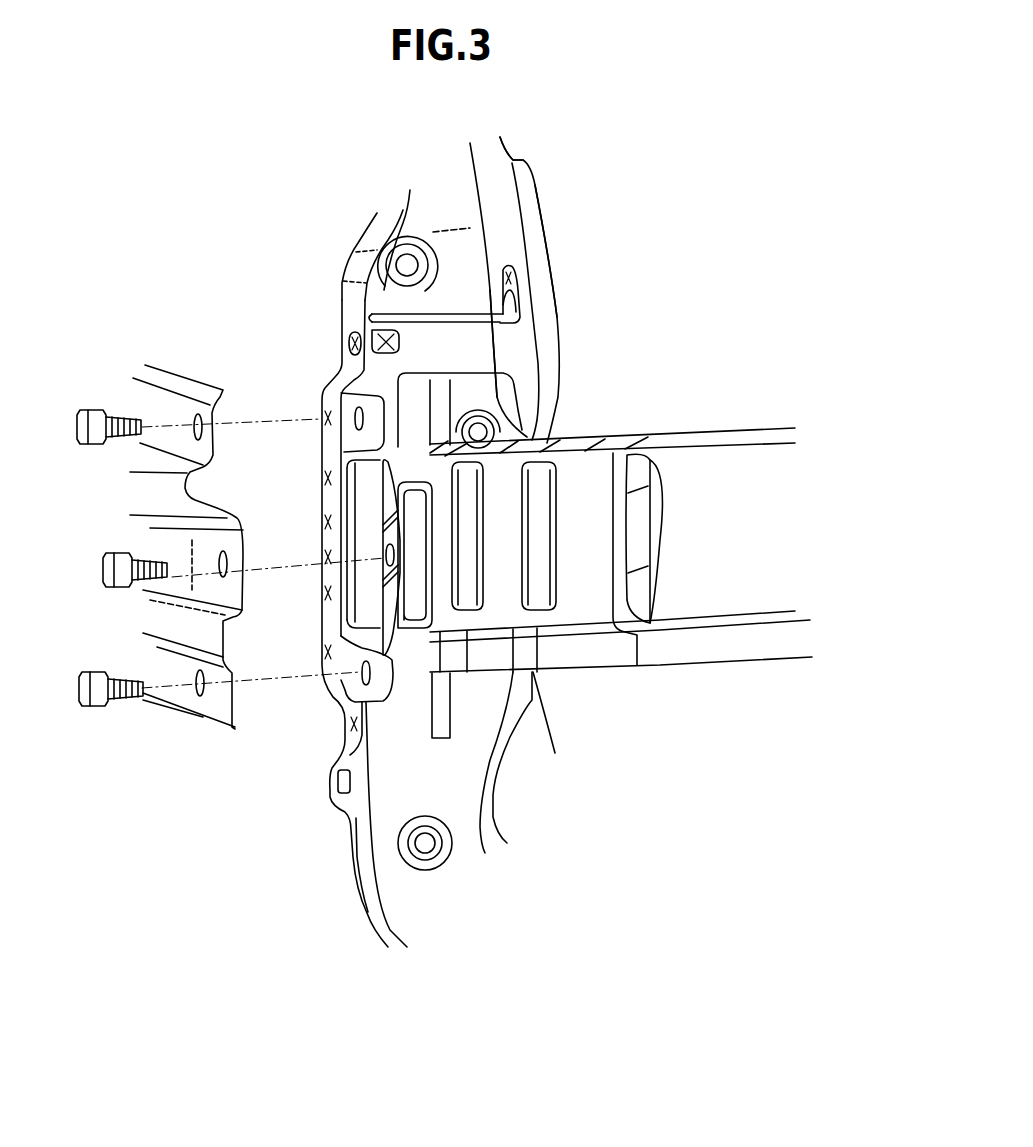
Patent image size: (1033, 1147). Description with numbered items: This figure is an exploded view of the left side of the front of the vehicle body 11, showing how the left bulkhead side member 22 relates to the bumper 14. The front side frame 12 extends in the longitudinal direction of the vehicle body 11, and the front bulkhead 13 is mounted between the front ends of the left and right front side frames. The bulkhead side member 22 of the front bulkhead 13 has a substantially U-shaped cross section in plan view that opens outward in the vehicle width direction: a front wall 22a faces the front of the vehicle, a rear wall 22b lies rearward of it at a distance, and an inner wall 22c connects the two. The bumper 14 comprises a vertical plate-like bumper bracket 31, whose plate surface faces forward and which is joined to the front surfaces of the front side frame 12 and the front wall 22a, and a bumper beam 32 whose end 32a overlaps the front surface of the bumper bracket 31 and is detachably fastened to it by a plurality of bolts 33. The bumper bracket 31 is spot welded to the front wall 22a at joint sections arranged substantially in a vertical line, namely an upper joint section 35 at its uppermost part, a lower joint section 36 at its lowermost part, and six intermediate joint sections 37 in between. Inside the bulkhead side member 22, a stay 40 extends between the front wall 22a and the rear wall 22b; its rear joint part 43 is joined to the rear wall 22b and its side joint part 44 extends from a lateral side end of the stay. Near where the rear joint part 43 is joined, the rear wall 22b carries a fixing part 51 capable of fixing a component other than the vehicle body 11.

The vehicle body 11 is at (738, 128).
The front side frame 12 is at (728, 468).
The front bulkhead 13 is at (533, 160).
The bumper 14 is at (225, 263).
The bulkhead side member 22 is at (510, 208).
The front wall 22a is at (352, 306).
The rear wall 22b is at (525, 338).
The inner wall 22c is at (480, 353).
The bumper bracket 31 is at (318, 398).
The bumper beam 32 is at (178, 372).
The end of bumper beam 32a is at (212, 708).
The bolt 33 is at (96, 412).
The upper joint section 35 is at (347, 343).
The lower joint section 36 is at (348, 726).
The intermediate joint section 37 is at (324, 420).
The stay 40 is at (458, 304).
The rear joint part 43 is at (515, 295).
The side joint part 44 is at (396, 358).
The fixing part 51 is at (517, 329).